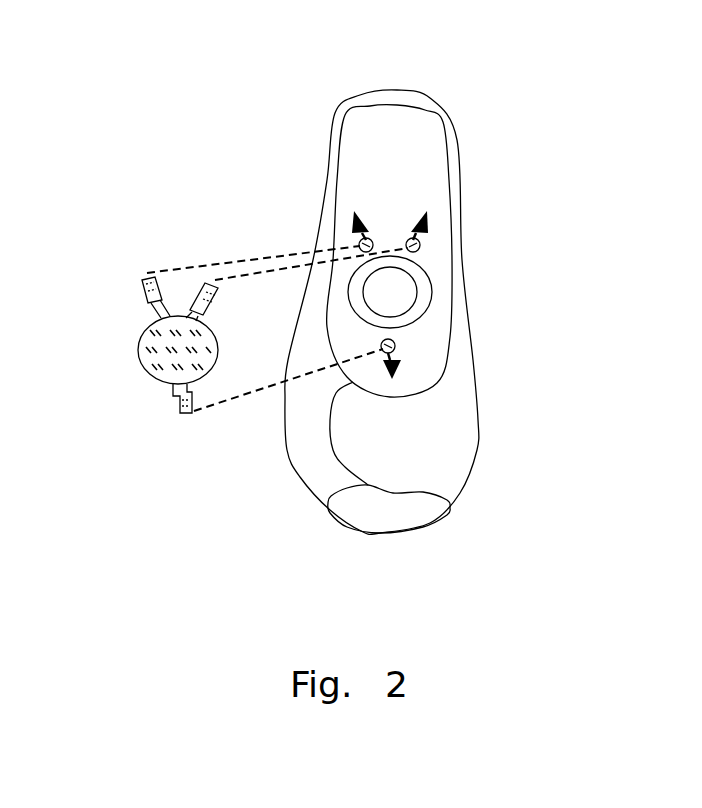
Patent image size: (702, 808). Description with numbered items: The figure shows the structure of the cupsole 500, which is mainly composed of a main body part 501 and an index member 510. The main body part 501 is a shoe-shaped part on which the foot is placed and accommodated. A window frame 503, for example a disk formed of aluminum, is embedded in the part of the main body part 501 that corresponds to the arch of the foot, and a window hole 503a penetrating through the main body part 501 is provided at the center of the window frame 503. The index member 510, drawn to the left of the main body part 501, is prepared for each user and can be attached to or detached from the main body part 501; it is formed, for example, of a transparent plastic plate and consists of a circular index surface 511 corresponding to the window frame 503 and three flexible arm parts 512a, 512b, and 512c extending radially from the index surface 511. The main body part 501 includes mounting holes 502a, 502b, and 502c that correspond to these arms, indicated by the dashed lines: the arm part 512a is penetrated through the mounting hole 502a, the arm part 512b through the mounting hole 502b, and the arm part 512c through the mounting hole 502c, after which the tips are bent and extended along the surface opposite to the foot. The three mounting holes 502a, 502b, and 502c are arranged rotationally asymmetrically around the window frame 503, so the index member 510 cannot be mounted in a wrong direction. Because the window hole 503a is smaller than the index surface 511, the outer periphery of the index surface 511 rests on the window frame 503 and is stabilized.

The cupsole 500 is at (492, 99).
The main body part 501 is at (430, 157).
The mounting hole 502a is at (359, 243).
The mounting hole 502b is at (420, 243).
The mounting hole 502c is at (396, 348).
The window frame 503 is at (420, 272).
The window hole 503a is at (400, 293).
The index member 510 is at (215, 316).
The index surface 511 is at (150, 362).
The arm part 512a is at (145, 293).
The arm part 512b is at (221, 290).
The arm part 512c is at (175, 411).